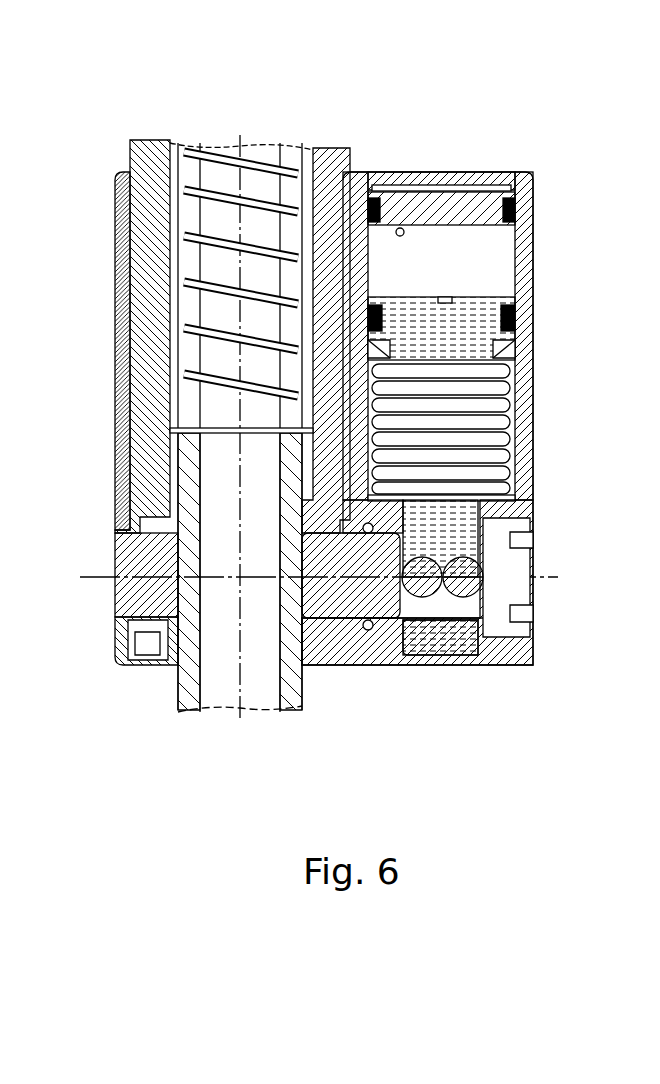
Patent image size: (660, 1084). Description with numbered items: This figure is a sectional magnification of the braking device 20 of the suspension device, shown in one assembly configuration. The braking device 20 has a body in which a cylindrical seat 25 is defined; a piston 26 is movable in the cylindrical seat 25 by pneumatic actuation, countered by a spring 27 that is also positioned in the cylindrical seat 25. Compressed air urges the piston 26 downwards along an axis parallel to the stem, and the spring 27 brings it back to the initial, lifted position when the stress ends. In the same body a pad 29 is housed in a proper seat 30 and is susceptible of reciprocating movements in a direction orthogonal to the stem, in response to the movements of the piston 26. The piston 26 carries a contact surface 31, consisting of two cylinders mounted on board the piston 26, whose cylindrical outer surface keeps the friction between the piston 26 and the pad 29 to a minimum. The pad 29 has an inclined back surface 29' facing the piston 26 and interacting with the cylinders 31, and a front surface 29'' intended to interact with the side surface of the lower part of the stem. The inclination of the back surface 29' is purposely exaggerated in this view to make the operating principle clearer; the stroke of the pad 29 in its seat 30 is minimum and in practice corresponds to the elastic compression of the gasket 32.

The braking device 20 is at (535, 187).
The cylindrical seat 25 is at (473, 273).
The piston 26 is at (467, 345).
The spring 27 is at (497, 433).
The pad 29 is at (245, 452).
The inclined back surface 29' is at (433, 706).
The front surface 29'' is at (262, 615).
The seat 30 is at (330, 528).
The contact surface 31 is at (480, 585).
The gasket 32 is at (360, 635).